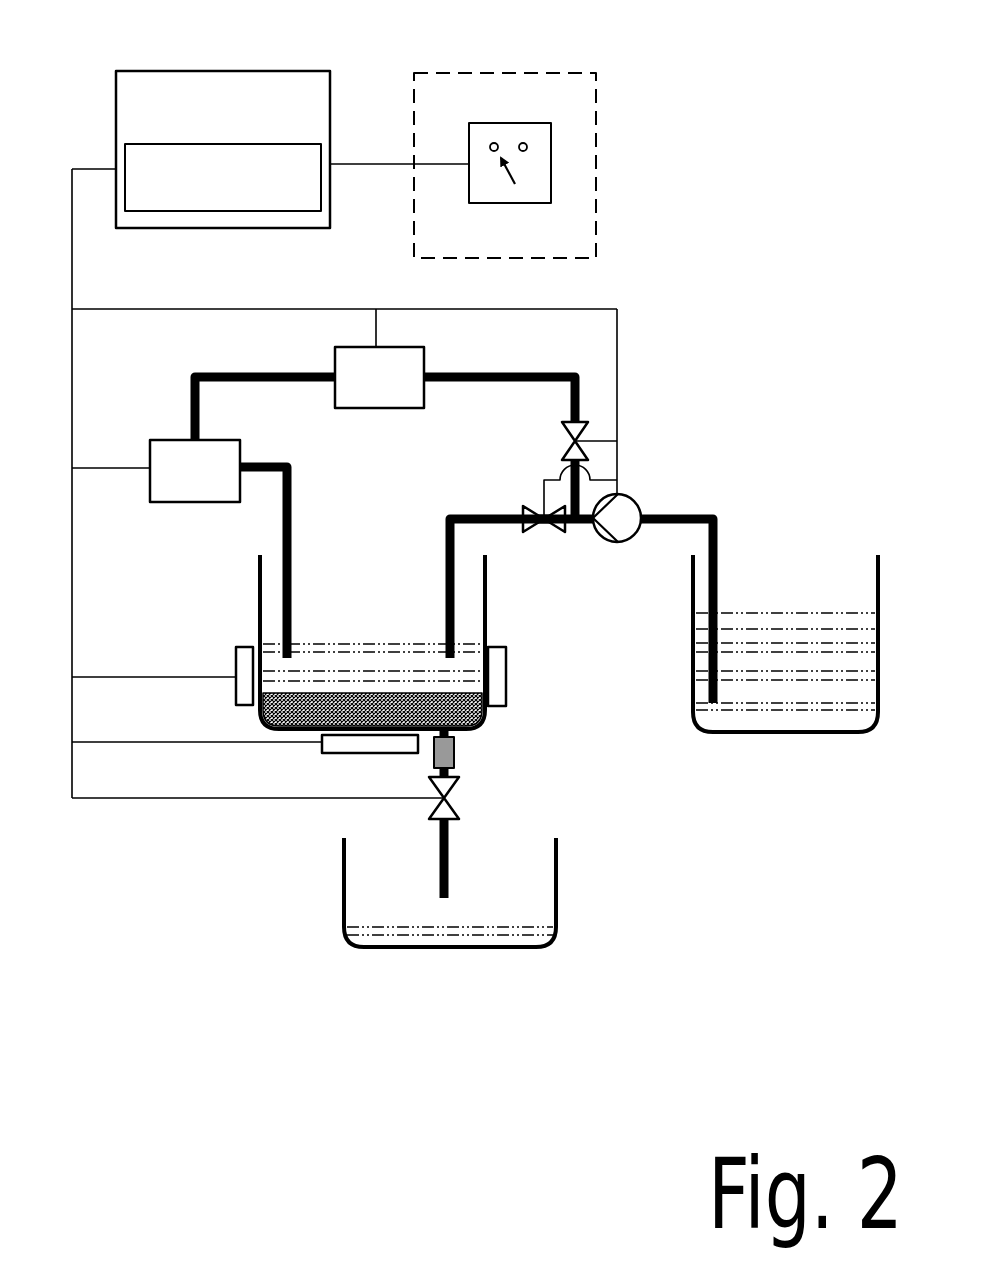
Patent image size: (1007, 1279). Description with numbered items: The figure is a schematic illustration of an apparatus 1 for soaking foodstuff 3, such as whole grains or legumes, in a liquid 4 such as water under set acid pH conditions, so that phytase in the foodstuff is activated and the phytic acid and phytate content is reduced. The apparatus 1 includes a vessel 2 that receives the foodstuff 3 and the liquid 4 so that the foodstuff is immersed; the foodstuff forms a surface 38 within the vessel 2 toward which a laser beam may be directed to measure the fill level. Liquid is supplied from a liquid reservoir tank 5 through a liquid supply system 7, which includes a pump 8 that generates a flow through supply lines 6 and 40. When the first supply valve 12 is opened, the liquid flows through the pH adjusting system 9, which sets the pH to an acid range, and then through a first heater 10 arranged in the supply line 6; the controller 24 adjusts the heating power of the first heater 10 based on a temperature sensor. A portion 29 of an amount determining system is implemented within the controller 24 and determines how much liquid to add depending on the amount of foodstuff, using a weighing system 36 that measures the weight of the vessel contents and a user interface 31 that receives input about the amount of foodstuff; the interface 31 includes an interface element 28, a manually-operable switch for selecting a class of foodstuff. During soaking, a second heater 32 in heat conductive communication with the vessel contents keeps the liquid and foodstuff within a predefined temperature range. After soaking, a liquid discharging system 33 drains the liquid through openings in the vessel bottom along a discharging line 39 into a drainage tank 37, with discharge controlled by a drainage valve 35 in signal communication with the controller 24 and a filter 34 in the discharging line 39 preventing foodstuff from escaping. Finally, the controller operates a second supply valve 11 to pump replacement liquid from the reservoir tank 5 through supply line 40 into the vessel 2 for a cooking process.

The apparatus 1 is at (821, 70).
The vessel 2 is at (258, 612).
The foodstuff 3 is at (400, 705).
The liquid 4 is at (343, 657).
The liquid reservoir tank 5 is at (792, 735).
The supply line 6 is at (258, 372).
The liquid supply system 7 is at (664, 329).
The pump 8 is at (642, 502).
The pH adjusting system 9 is at (387, 392).
The first heater 10 is at (207, 486).
The second supply valve 11 is at (548, 535).
The first supply valve 12 is at (572, 441).
The controller 24 is at (297, 124).
The interface element 28 is at (551, 160).
The portion of the amount determining system 29 is at (245, 189).
The interface 31 is at (500, 73).
The second heater 32 is at (236, 690).
The liquid discharging system 33 is at (521, 811).
The filter 34 is at (455, 752).
The drainage valve 35 is at (455, 800).
The weighing system 36 is at (355, 753).
The drainage tank 37 is at (386, 948).
The surface 38 is at (468, 645).
The discharging line 39 is at (450, 772).
The supply line 40 is at (478, 514).